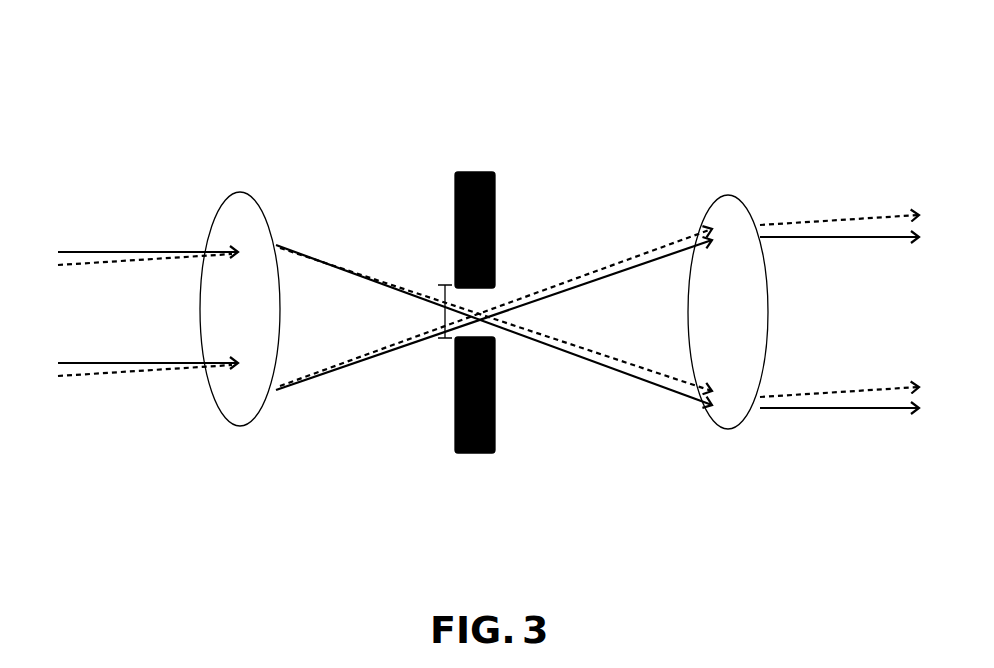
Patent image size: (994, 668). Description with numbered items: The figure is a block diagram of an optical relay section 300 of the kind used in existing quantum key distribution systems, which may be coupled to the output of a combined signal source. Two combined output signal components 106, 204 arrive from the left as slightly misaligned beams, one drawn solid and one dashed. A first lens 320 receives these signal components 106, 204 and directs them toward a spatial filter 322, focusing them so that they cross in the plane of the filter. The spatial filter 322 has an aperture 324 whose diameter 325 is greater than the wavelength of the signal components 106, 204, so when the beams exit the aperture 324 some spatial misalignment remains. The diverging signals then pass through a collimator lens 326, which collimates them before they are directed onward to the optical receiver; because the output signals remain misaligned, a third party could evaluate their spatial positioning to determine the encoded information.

The optical relay section 300 is at (226, 66).
The output signal component 106 is at (130, 248).
The output signal component 204 is at (66, 381).
The lens 320 is at (249, 189).
The spatial filter 322 is at (501, 186).
The aperture 324 is at (501, 340).
The diameter 325 is at (440, 319).
The collimator lens 326 is at (734, 190).